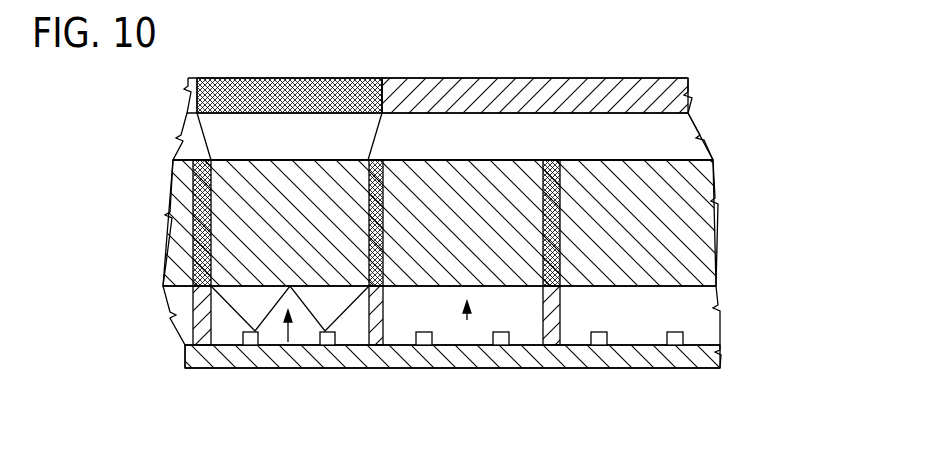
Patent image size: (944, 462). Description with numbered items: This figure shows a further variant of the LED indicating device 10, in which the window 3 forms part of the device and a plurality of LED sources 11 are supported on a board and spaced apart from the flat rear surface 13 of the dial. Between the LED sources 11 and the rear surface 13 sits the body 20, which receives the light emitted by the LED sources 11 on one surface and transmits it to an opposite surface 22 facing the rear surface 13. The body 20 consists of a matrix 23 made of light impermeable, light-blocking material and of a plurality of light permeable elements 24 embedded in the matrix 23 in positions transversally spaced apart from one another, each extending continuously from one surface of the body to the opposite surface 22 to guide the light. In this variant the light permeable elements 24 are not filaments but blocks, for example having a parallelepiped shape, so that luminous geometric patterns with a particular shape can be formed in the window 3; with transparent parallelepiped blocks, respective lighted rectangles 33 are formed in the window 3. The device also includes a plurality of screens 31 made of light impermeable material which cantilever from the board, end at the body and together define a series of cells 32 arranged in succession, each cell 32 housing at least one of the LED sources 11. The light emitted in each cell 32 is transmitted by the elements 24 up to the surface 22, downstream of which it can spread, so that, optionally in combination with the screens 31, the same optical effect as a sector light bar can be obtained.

The window 3 is at (500, 98).
The LED indicating device 10 is at (745, 100).
The LED sources 11 is at (250, 342).
The flat rear surface of dial 13 is at (620, 120).
The body 20 is at (715, 222).
The opposite surface 22 is at (638, 158).
The matrix 23 is at (545, 178).
The light permeable elements 24 is at (265, 180).
The screens 31 is at (195, 300).
The cells 32 is at (288, 344).
The lighted rectangles 33 is at (258, 95).